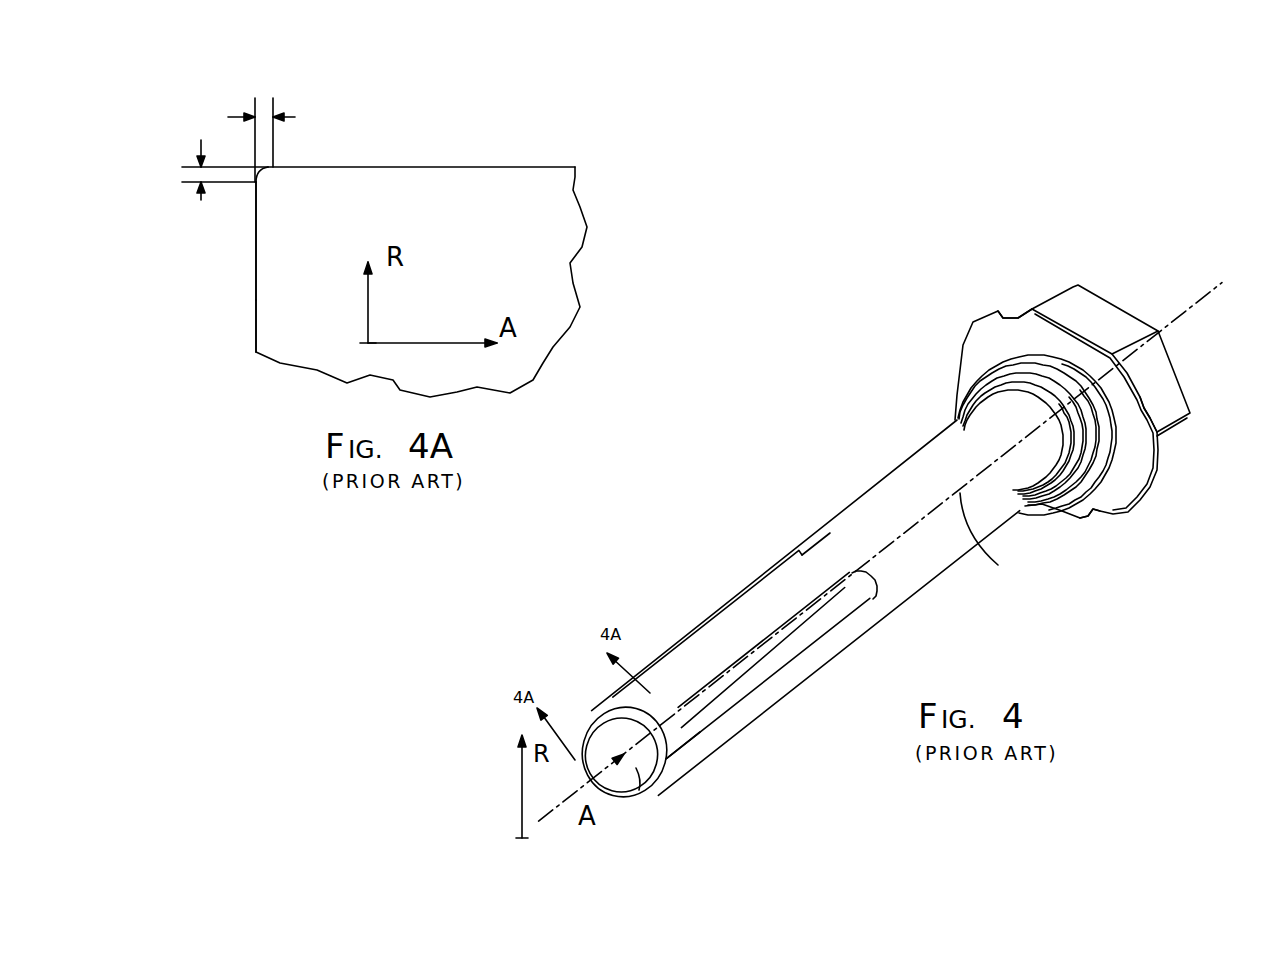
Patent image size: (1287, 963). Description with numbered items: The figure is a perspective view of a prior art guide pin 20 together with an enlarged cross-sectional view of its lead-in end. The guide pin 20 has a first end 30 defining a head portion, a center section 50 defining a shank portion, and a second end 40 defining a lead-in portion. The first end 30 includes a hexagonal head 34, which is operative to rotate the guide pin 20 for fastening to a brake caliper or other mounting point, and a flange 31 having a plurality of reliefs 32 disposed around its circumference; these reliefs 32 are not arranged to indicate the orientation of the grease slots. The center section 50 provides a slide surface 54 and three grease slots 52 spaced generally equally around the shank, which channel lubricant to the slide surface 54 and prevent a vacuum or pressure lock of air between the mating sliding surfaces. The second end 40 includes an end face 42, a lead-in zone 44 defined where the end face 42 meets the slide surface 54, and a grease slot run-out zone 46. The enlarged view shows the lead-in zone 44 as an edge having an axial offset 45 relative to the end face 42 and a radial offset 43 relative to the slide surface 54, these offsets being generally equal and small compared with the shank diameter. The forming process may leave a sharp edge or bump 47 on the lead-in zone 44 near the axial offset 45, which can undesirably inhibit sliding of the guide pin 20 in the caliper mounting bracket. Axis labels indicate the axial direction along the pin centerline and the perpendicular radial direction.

In FIG. 4, the guide pin 20 is at (899, 300).
In FIG. 4, the first end 30 is at (1164, 310).
In FIG. 4, the flange 31 is at (1142, 470).
In FIG. 4, the reliefs 32 is at (1010, 312).
In FIG. 4, the hexagonal head 34 is at (1160, 363).
In FIG. 4A, the second end 40 is at (190, 287).
In FIG. 4, the second end 40 is at (631, 819).
In FIG. 4A, the end face 42 is at (256, 301).
In FIG. 4, the end face 42 is at (633, 798).
In FIG. 4A, the radial offset 43 is at (193, 203).
In FIG. 4A, the lead-in zone 44 is at (204, 119).
In FIG. 4, the lead-in zone 44 is at (679, 768).
In FIG. 4A, the axial offset 45 is at (295, 117).
In FIG. 4, the grease slot run-out zone 46 is at (668, 742).
In FIG. 4A, the sharp edge or bump 47 is at (275, 167).
In FIG. 4, the center section 50 is at (848, 455).
In FIG. 4, the grease slots 52 is at (762, 574).
In FIG. 4A, the slide surface 54 is at (520, 166).
In FIG. 4, the slide surface 54 is at (847, 548).